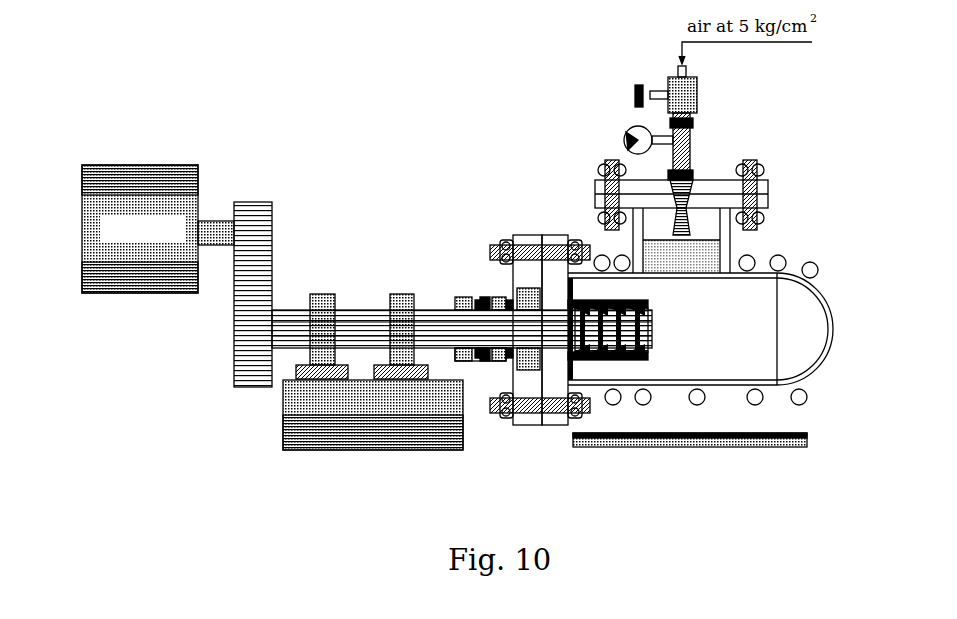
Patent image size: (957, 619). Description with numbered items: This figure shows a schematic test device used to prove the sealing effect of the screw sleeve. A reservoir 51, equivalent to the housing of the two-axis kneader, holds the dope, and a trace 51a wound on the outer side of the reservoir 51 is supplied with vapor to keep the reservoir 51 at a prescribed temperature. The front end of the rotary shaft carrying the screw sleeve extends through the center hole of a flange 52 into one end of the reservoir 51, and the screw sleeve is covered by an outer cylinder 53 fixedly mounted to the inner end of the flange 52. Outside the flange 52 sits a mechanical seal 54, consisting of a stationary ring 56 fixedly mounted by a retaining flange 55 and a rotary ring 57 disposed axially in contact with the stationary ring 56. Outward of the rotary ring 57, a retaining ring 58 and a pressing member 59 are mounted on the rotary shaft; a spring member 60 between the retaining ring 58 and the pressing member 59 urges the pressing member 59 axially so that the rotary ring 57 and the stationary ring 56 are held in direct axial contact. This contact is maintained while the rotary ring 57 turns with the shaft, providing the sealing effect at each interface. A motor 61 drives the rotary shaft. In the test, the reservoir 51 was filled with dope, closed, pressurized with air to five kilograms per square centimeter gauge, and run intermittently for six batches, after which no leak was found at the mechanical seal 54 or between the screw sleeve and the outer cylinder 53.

The reservoir 51 is at (793, 272).
The trace 51a is at (777, 258).
The flange 52 is at (554, 425).
The outer cylinder 53 is at (618, 357).
The mechanical seal 54 is at (485, 370).
The retaining flange 55 is at (526, 425).
The stationary ring 56 is at (528, 296).
The rotary ring 57 is at (499, 296).
The retaining ring 58 is at (456, 302).
The pressing member 59 is at (481, 297).
The spring member 60 is at (472, 298).
The motor 61 is at (198, 190).